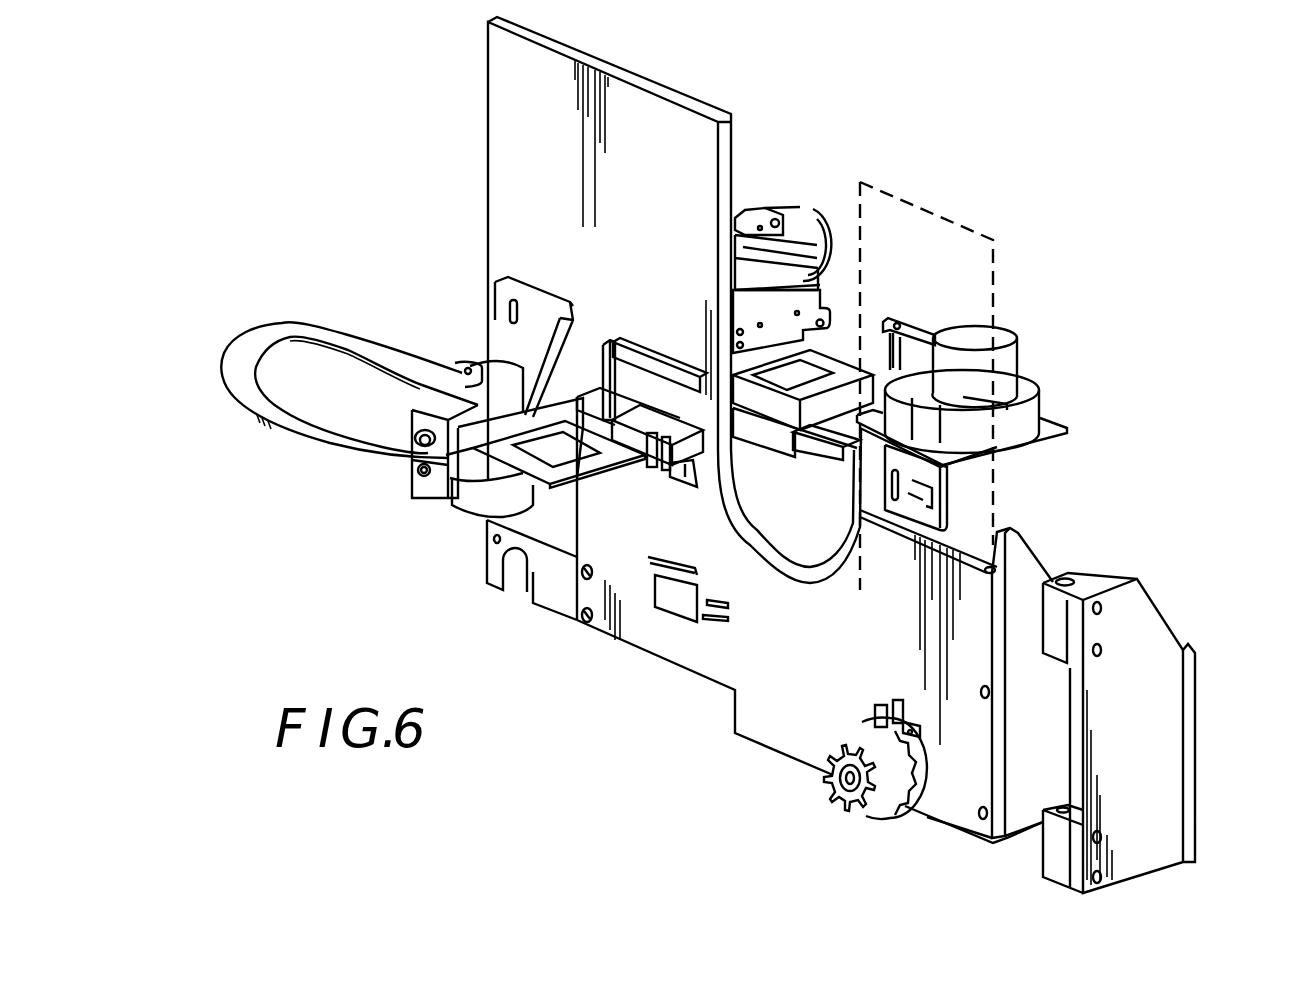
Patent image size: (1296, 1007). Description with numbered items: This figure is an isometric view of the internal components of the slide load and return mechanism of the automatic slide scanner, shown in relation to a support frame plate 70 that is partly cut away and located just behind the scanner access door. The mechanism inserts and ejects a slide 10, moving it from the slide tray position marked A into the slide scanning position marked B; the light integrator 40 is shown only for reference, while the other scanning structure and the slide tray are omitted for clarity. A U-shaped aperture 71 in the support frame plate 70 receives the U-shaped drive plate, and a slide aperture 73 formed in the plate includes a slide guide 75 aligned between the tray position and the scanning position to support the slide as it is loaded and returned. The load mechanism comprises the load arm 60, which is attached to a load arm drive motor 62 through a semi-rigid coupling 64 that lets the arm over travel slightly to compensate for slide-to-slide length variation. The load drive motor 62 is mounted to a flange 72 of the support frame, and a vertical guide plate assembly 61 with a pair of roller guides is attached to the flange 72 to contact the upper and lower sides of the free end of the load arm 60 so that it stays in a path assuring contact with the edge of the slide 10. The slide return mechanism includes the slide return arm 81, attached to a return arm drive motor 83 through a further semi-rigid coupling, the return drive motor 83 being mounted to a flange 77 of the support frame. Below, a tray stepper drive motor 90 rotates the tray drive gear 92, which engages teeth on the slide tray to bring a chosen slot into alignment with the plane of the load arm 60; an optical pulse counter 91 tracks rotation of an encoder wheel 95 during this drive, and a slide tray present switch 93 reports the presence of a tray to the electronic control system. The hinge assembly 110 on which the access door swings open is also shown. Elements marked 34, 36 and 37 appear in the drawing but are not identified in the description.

The slide 10 is at (840, 340).
The post 34 is at (620, 365).
The guide 36 is at (763, 425).
The guide 37 is at (838, 447).
The light integrator 40 is at (806, 158).
The load arm 60 is at (296, 305).
The vertical guide plate assembly 61 is at (393, 478).
The load arm drive motor 62 is at (480, 513).
The semi-rigid coupling 64 is at (470, 360).
The support frame plate 70 is at (667, 123).
The U-shaped aperture 71 is at (772, 560).
The flange 72 is at (493, 286).
The slide aperture 73 is at (650, 362).
The slide guide 75 is at (648, 470).
The flange 77 is at (1053, 423).
The slide return arm 81 is at (913, 330).
The return arm drive motor 83 is at (1017, 362).
The tray stepper drive motor 90 is at (922, 810).
The optical pulse counter 91 is at (873, 717).
The tray drive gear 92 is at (840, 797).
The slide tray present switch 93 is at (670, 600).
The encoder wheel 95 is at (903, 815).
The hinge assembly 110 is at (1185, 566).